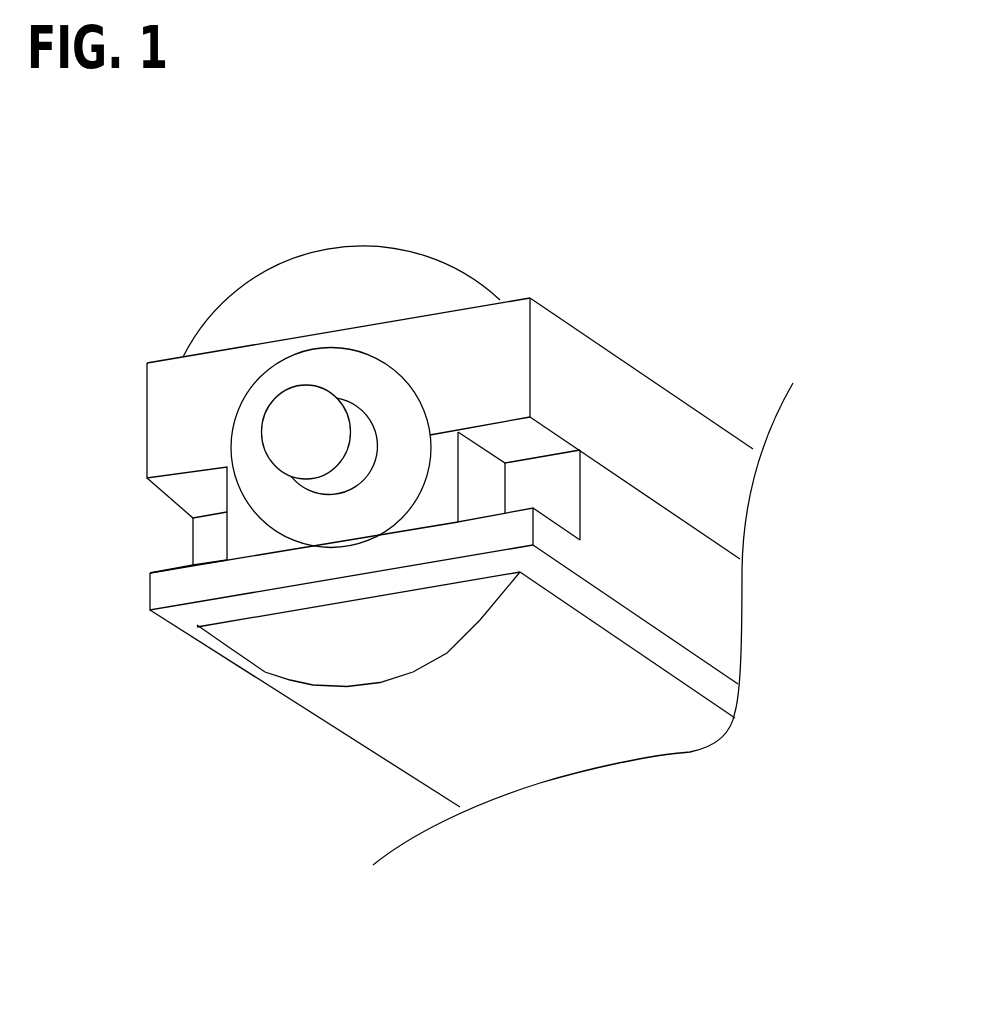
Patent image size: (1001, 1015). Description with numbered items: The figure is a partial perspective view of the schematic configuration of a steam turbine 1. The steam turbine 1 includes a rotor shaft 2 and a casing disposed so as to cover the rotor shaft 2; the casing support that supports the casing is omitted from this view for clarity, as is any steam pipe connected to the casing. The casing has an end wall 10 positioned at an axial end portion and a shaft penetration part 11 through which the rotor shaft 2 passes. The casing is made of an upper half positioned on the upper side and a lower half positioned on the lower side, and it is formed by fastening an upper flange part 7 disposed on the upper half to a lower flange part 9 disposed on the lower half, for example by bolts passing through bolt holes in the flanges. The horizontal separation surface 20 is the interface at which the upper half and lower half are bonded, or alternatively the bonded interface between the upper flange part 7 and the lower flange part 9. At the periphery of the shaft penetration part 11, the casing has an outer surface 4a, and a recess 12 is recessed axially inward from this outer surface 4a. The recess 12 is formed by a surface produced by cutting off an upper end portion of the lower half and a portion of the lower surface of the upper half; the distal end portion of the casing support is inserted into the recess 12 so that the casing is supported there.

The steam turbine 1 is at (780, 180).
The rotor shaft 2 is at (356, 422).
The outer surface 4a is at (236, 370).
The upper flange part 7 is at (708, 420).
The horizontal separation surface 20 is at (688, 529).
The end wall 10 is at (383, 262).
The shaft penetration part 11 is at (376, 400).
The recess 12 is at (148, 556).
The lower flange part 9 is at (713, 683).